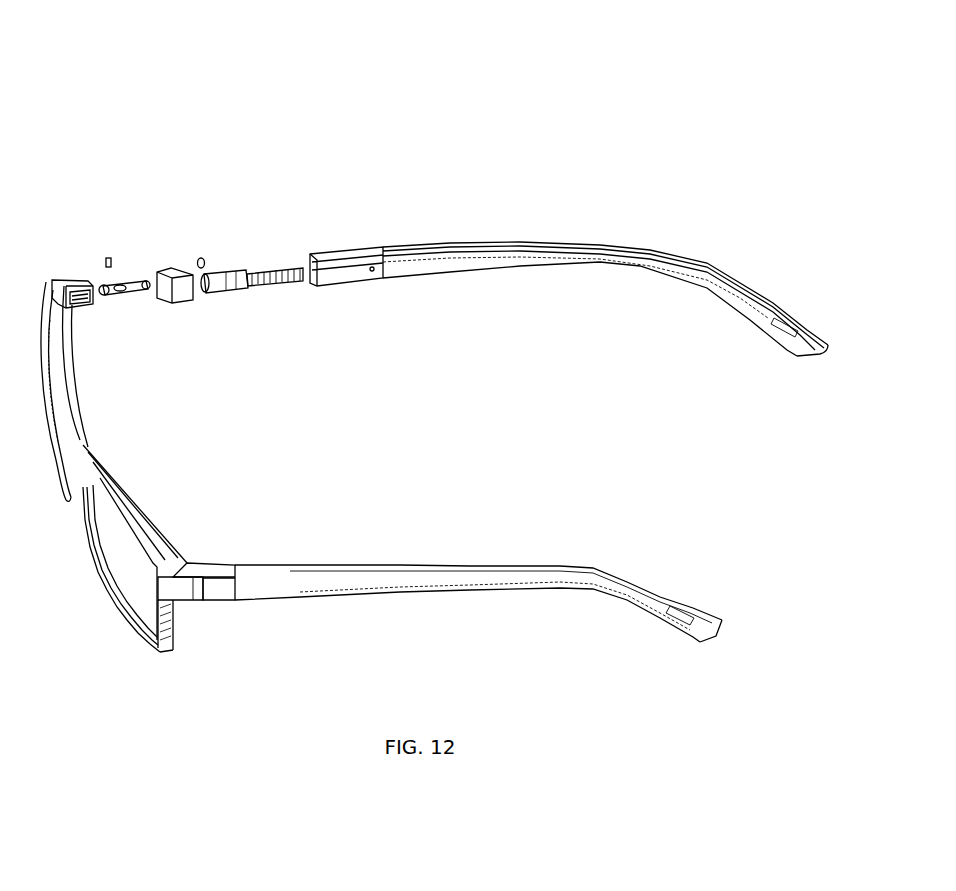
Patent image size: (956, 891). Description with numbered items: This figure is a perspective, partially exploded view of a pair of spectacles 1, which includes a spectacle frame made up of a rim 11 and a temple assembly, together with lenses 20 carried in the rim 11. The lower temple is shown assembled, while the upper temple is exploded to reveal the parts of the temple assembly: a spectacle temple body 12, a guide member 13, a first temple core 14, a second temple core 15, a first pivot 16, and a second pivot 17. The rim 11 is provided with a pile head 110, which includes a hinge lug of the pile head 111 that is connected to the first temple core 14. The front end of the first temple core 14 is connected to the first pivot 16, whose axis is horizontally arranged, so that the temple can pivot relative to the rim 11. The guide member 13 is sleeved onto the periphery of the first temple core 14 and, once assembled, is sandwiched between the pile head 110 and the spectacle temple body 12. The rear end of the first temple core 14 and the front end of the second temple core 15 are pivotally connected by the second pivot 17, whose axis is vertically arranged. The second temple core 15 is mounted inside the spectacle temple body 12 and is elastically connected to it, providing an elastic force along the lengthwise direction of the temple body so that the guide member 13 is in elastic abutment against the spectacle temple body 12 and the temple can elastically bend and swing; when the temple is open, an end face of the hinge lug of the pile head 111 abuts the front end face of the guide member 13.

The pair of spectacles 1 is at (320, 88).
The rim 11 is at (51, 280).
The pile head 110 is at (73, 280).
The hinge lug of the pile head 111 is at (87, 282).
The spectacle temple body 12 is at (361, 252).
The guide member 13 is at (180, 270).
The first temple core 14 is at (136, 280).
The second temple core 15 is at (242, 276).
The first pivot 16 is at (112, 258).
The second pivot 17 is at (206, 258).
The lenses 20 is at (134, 598).